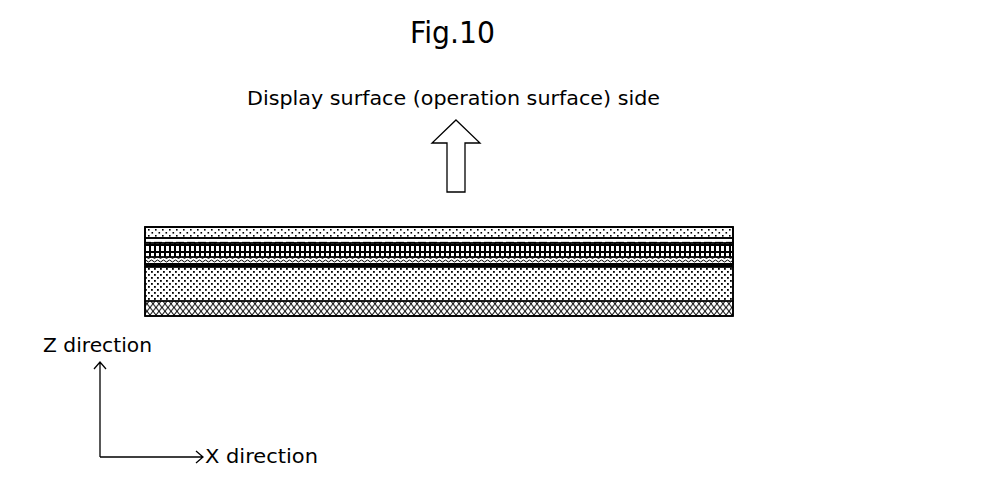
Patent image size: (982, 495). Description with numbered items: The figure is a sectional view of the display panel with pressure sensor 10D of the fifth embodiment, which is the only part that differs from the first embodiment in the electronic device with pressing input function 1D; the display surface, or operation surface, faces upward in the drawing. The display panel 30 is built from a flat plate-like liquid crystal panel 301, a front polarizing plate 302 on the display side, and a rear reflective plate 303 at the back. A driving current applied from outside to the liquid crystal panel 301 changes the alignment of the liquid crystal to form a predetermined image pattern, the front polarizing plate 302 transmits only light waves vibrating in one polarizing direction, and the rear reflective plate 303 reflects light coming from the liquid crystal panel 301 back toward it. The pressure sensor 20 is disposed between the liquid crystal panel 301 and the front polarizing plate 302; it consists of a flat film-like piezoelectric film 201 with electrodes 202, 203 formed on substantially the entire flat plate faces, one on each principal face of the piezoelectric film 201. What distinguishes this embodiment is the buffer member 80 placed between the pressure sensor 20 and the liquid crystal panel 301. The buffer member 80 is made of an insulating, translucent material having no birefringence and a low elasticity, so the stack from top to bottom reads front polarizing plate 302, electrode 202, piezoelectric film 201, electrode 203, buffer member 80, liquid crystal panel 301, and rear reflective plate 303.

The electronic device with pressing input function 1D is at (227, 190).
The display panel with pressure sensor 10D is at (722, 226).
The pressure sensor 20 is at (792, 218).
The electrode 202 is at (733, 233).
The piezoelectric film 201 is at (733, 248).
The electrode 203 is at (733, 259).
The buffer member 80 is at (707, 266).
The display panel 30 is at (82, 222).
The front polarizing plate 302 is at (145, 234).
The liquid crystal panel 301 is at (145, 285).
The rear reflective plate 303 is at (145, 311).